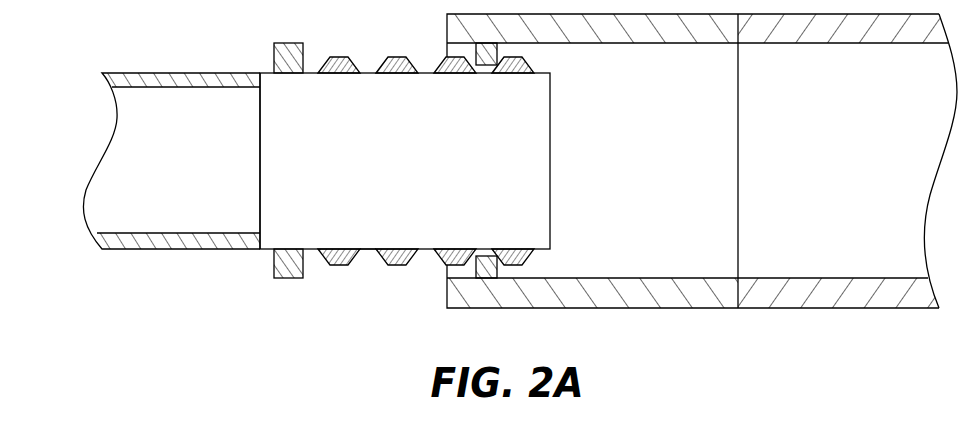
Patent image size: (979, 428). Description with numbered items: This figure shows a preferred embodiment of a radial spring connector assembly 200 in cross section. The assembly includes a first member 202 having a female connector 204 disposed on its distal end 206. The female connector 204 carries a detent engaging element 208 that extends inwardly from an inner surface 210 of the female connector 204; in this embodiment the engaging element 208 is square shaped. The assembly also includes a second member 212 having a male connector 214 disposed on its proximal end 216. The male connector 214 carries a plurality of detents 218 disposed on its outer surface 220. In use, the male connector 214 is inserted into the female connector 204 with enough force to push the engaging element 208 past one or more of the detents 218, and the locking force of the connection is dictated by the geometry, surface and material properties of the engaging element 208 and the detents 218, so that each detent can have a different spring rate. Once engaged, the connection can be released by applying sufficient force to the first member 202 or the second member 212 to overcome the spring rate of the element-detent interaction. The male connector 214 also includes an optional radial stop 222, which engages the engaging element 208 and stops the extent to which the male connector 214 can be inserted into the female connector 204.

The radial spring connector assembly 200 is at (56, 109).
The first member 202 is at (870, 165).
The female connector 204 is at (598, 314).
The distal end 206 is at (738, 198).
The detent engaging element 208 is at (485, 273).
The inner surface 210 is at (593, 44).
The second member 212 is at (157, 168).
The male connector 214 is at (389, 167).
The proximal end 216 is at (258, 197).
The detents 218 is at (395, 265).
The outer surface 220 is at (367, 250).
The radial stop 222 is at (282, 53).